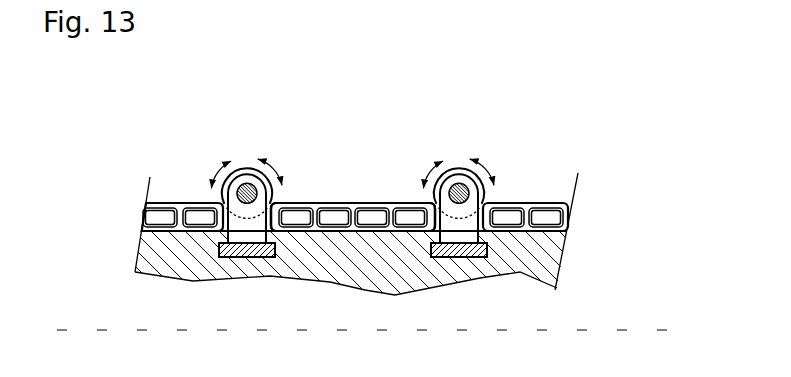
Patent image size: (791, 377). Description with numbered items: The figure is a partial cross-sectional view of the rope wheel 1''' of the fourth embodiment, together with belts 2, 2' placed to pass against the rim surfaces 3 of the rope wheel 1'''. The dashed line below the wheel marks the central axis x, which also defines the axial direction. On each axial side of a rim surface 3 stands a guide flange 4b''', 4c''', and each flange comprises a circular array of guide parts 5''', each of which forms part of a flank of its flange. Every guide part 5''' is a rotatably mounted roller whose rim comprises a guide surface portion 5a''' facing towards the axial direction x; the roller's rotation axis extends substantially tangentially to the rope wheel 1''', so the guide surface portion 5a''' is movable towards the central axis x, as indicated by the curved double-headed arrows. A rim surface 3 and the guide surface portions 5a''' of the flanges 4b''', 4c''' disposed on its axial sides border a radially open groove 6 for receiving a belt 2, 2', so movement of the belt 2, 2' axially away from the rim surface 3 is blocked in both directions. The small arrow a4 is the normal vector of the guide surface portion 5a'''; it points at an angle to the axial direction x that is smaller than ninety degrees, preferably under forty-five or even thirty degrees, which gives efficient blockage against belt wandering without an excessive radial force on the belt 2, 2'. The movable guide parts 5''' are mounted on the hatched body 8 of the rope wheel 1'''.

The rope wheel 1''' is at (300, 237).
The belt 2 is at (355, 183).
The belt 2' is at (353, 217).
The rim surface 3 is at (195, 230).
The guide flange 4b''' is at (270, 158).
The guide flange 4c''' is at (476, 158).
The guide part 5''' is at (357, 158).
The guide surface portion 5a''' is at (375, 144).
The groove 6 is at (356, 193).
The body 8 is at (353, 273).
The normal vector a4 is at (278, 204).
The central axis x is at (375, 327).